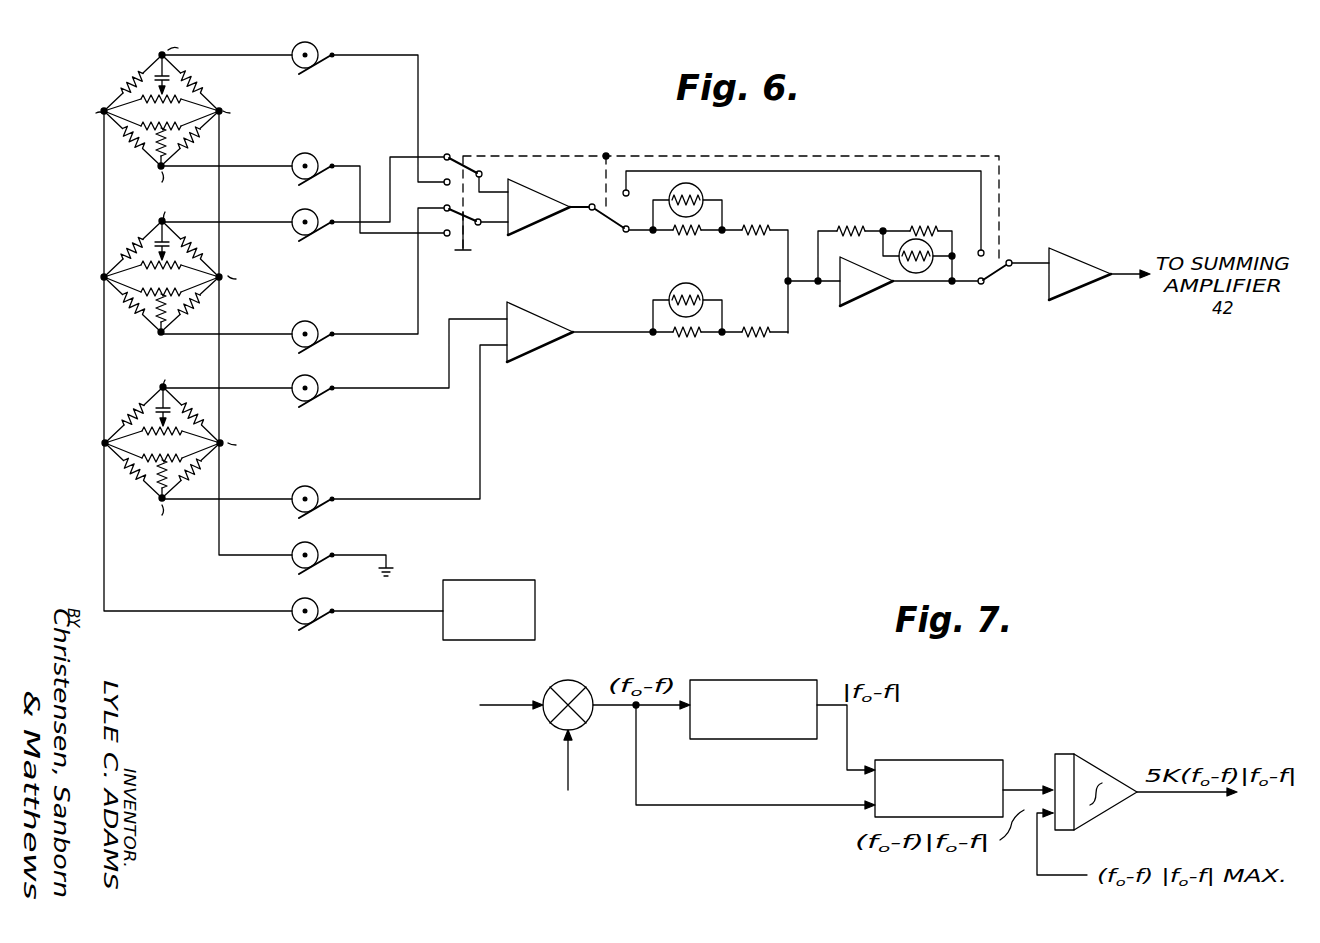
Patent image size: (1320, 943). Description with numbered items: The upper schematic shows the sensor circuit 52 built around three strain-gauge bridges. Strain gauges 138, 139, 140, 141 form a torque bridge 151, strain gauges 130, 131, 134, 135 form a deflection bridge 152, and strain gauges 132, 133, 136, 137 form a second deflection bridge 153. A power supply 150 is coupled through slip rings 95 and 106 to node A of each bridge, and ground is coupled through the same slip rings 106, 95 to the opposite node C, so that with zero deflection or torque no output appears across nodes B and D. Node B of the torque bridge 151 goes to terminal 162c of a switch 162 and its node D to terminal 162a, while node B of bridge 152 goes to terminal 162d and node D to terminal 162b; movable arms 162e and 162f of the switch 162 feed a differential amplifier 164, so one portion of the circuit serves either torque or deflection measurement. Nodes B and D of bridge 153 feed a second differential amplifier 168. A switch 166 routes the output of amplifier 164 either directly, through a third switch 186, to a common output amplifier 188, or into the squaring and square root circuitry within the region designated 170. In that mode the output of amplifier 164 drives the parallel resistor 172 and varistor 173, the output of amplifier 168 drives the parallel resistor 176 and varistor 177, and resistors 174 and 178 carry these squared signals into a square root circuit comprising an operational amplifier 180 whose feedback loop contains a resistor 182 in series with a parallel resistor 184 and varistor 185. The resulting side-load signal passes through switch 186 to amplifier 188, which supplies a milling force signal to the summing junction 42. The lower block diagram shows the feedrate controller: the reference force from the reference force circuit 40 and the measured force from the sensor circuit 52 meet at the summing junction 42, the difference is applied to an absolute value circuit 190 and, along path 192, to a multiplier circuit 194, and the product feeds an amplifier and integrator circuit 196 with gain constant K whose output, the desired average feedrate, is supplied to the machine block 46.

In FIG. 6, the torque bridge 151 is at (129, 112).
In FIG. 6, the deflection bridge 152 is at (130, 274).
In FIG. 6, the deflection bridge 153 is at (130, 448).
In FIG. 6, the strain gauge 138 is at (122, 78).
In FIG. 6, the strain gauge 139 is at (205, 79).
In FIG. 6, the strain gauge 140 is at (124, 154).
In FIG. 6, the strain gauge 141 is at (199, 146).
In FIG. 6, the strain gauge 130 is at (128, 240).
In FIG. 6, the strain gauge 131 is at (199, 242).
In FIG. 6, the strain gauge 134 is at (128, 318).
In FIG. 6, the strain gauge 135 is at (196, 313).
In FIG. 6, the strain gauge 132 is at (128, 402).
In FIG. 6, the strain gauge 133 is at (199, 409).
In FIG. 6, the strain gauge 136 is at (128, 496).
In FIG. 6, the strain gauge 137 is at (198, 479).
In FIG. 6, the slip ring 106 is at (305, 353).
In FIG. 6, the slip ring 95 is at (273, 370).
In FIG. 6, the power supply 150 is at (518, 578).
In FIG. 6, the switch 162 is at (466, 190).
In FIG. 6, the switch terminal 162a is at (447, 245).
In FIG. 6, the switch terminal 162b is at (443, 206).
In FIG. 6, the switch terminal 162c is at (446, 180).
In FIG. 6, the switch terminal 162d is at (471, 153).
In FIG. 6, the movable arm 162e is at (490, 175).
In FIG. 6, the movable arm 162f is at (492, 230).
In FIG. 6, the differential amplifier 164 is at (559, 202).
In FIG. 6, the switch 166 is at (615, 263).
In FIG. 6, the second differential amplifier 168 is at (533, 366).
In FIG. 6, the dashed enclosure 170 is at (795, 180).
In FIG. 6, the resistor 172 is at (676, 240).
In FIG. 6, the varistor 173 is at (704, 189).
In FIG. 6, the resistor 174 is at (750, 242).
In FIG. 6, the resistor 176 is at (681, 339).
In FIG. 6, the varistor 177 is at (704, 288).
In FIG. 6, the resistor 178 is at (750, 328).
In FIG. 6, the operational amplifier 180 is at (852, 306).
In FIG. 6, the resistor 182 is at (850, 227).
In FIG. 6, the resistor 184 is at (925, 228).
In FIG. 6, the varistor 185 is at (918, 274).
In FIG. 6, the third switch 186 is at (1003, 331).
In FIG. 6, the common output amplifier 188 is at (1086, 256).
In FIG. 7, the summing junction 42 is at (576, 682).
In FIG. 7, the reference force circuit 40 is at (457, 749).
In FIG. 7, the sensor circuit 52 is at (570, 801).
In FIG. 7, the absolute value circuit 190 is at (784, 678).
In FIG. 7, the difference signal line 192 is at (786, 810).
In FIG. 7, the multiplier circuit 194 is at (948, 760).
In FIG. 7, the amplifier and integrator circuit 196 is at (1102, 754).
In FIG. 7, the machine block 46 is at (1241, 829).